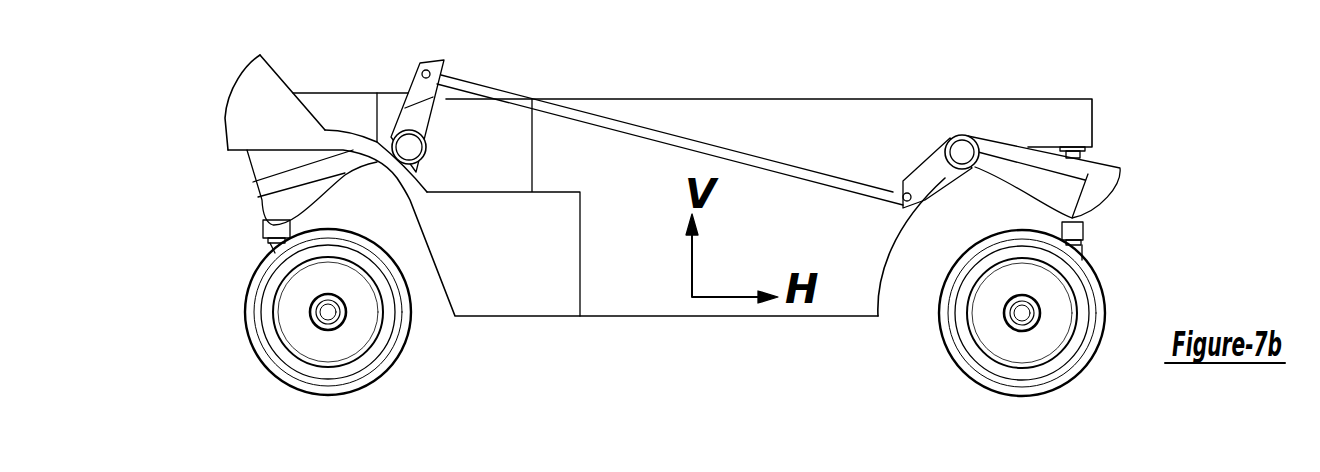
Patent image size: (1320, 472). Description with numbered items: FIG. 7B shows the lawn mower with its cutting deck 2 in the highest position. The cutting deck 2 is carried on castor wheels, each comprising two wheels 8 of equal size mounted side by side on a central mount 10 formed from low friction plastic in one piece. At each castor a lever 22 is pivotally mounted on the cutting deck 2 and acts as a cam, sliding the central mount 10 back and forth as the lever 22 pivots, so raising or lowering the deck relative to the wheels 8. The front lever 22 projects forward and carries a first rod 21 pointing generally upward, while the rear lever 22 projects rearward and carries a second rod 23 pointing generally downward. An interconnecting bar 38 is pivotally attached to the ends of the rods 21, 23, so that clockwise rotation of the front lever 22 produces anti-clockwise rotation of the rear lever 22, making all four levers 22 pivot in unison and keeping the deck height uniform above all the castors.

The cutting deck 2 is at (813, 307).
The wheels 8 is at (378, 368).
The central mount 10 is at (268, 247).
The first rod 21 is at (420, 118).
The lever 22 is at (270, 205).
The second rod 23 is at (938, 160).
The interconnecting bar 38 is at (707, 148).